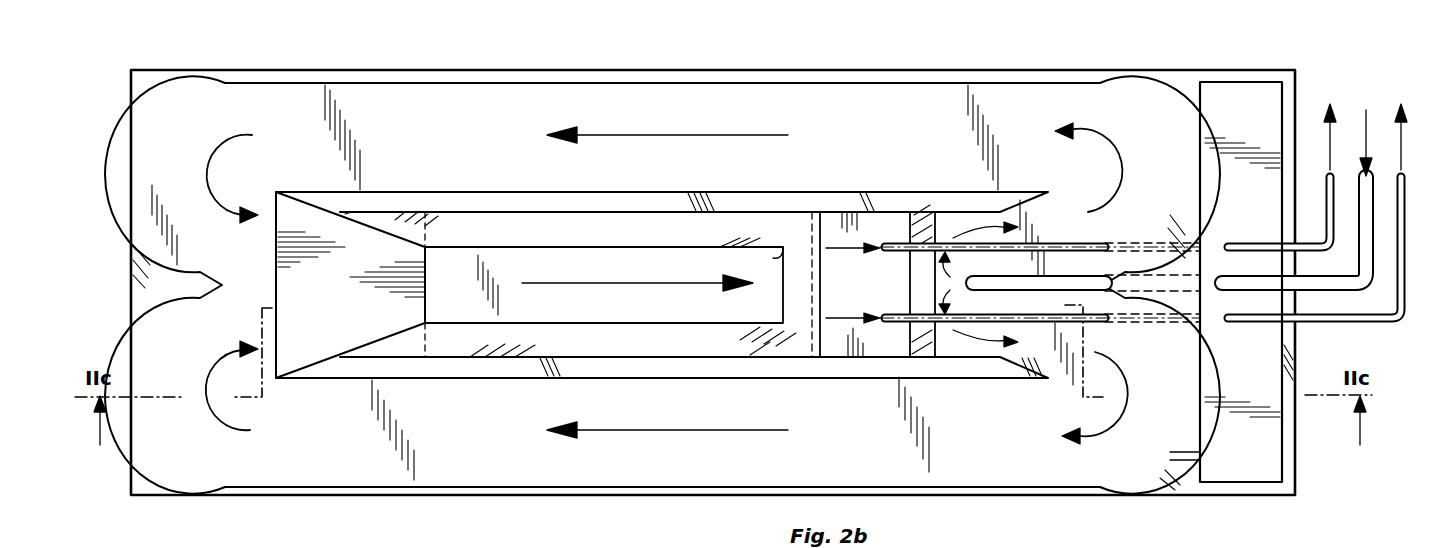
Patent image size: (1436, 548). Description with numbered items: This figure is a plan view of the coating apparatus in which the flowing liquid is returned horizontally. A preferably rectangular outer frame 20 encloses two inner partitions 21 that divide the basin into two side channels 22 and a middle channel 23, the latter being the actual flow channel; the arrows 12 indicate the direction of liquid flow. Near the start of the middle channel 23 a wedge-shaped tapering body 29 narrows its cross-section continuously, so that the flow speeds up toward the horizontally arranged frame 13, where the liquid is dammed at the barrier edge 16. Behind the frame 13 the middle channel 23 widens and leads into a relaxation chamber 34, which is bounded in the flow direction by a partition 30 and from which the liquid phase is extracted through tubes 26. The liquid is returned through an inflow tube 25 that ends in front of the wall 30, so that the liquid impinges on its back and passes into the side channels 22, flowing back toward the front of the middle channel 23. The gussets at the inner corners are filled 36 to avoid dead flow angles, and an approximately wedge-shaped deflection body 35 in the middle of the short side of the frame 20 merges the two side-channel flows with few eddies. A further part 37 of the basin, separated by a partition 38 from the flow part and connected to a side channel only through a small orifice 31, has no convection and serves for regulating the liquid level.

The fluid flow direction 12 is at (678, 135).
The frame 13 is at (626, 215).
The barrier edge 16 is at (770, 240).
The outer frame 20 is at (262, 502).
The inner partitions 21 is at (480, 190).
The side channels 22 is at (575, 92).
The middle channel 23 is at (690, 255).
The inflow tube 25 is at (1262, 292).
The tube 26 is at (900, 324).
The wedge-shaped tapering body 29 is at (358, 326).
The partition 30 is at (905, 230).
The small orifice 31 is at (1178, 455).
The relaxation chamber 34 is at (836, 225).
The deflection body 35 is at (195, 277).
The filled gussets 36 is at (170, 100).
The part of the channel basin 37 is at (1255, 90).
The partition 38 is at (1195, 412).